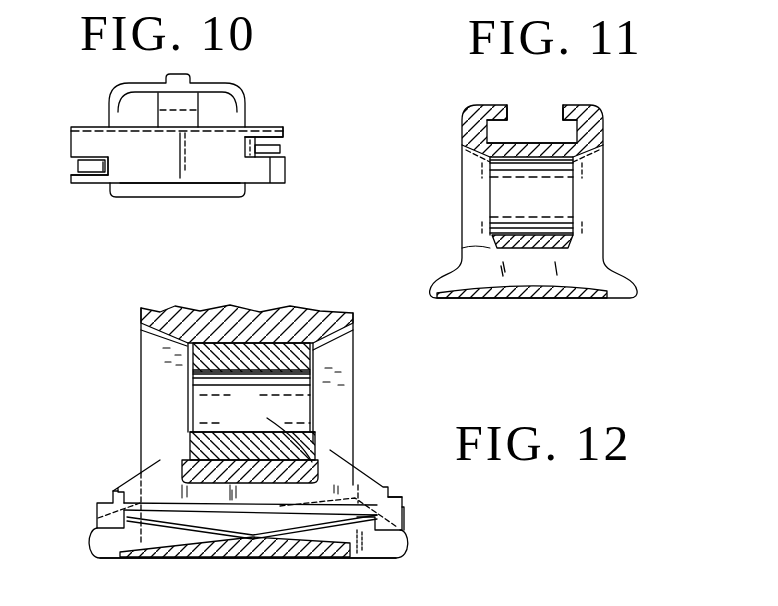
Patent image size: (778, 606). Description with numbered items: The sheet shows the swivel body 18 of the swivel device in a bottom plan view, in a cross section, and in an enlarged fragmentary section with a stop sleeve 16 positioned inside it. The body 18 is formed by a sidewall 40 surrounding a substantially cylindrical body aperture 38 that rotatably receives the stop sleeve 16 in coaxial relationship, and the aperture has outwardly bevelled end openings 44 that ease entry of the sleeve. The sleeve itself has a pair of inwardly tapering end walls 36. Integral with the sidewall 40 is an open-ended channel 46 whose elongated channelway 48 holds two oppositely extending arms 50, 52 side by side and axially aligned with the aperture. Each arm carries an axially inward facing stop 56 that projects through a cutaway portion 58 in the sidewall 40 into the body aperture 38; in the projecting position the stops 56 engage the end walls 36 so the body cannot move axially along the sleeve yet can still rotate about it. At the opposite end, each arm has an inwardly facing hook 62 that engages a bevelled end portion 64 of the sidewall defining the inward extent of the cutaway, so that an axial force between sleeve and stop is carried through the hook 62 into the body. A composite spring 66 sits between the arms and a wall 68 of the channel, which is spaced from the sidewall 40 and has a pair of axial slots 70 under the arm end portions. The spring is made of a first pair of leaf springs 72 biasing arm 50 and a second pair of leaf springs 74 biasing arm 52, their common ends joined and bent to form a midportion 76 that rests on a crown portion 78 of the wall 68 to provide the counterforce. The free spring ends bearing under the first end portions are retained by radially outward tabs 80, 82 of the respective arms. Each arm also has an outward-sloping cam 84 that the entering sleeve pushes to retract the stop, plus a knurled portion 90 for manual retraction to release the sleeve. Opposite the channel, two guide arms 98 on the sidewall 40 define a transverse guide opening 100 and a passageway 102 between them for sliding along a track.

In FIG. 12, the stop sleeve 16 is at (236, 352).
In FIG. 10, the swivel body 18 is at (109, 113).
In FIG. 11, the swivel body 18 is at (465, 130).
In FIG. 12, the swivel body 18 is at (355, 347).
In FIG. 12, the end walls 36 is at (190, 433).
In FIG. 11, the body aperture 38 is at (543, 197).
In FIG. 12, the body aperture 38 is at (313, 400).
In FIG. 10, the sidewall 40 is at (172, 183).
In FIG. 11, the sidewall 40 is at (604, 200).
In FIG. 12, the sidewall 40 is at (287, 321).
In FIG. 11, the end openings 44 is at (478, 178).
In FIG. 12, the end openings 44 is at (157, 374).
In FIG. 10, the channel 46 is at (210, 197).
In FIG. 11, the channel 46 is at (442, 268).
In FIG. 11, the channelway 48 is at (544, 274).
In FIG. 12, the channelway 48 is at (163, 533).
In FIG. 10, the arm 50 is at (280, 152).
In FIG. 12, the arm 50 is at (153, 500).
In FIG. 10, the arm 52 is at (80, 164).
In FIG. 12, the arm 52 is at (353, 523).
In FIG. 12, the stops 56 is at (178, 449).
In FIG. 11, the cutaway portions 58 is at (478, 245).
In FIG. 12, the hook 62 is at (223, 430).
In FIG. 11, the bevelled end portion 64 is at (490, 237).
In FIG. 12, the bevelled end portion 64 is at (337, 473).
In FIG. 12, the spring 66 is at (317, 525).
In FIG. 10, the wall 68 is at (162, 180).
In FIG. 11, the wall 68 is at (527, 297).
In FIG. 12, the wall 68 is at (277, 548).
In FIG. 10, the slots 70 is at (85, 183).
In FIG. 11, the slots 70 is at (615, 295).
In FIG. 12, the slots 70 is at (373, 543).
In FIG. 10, the first pair of leaf springs 72 is at (252, 145).
In FIG. 10, the second pair of leaf springs 74 is at (104, 178).
In FIG. 12, the midportion 76 is at (253, 540).
In FIG. 12, the crown portion 78 is at (253, 532).
In FIG. 10, the tab 80 is at (284, 150).
In FIG. 12, the tab 80 is at (110, 518).
In FIG. 10, the tab 82 is at (84, 168).
In FIG. 12, the tab 82 is at (404, 527).
In FIG. 12, the cam 84 is at (140, 477).
In FIG. 12, the knurled portion 90 is at (113, 497).
In FIG. 11, the guide arms 98 is at (497, 108).
In FIG. 11, the guide opening 100 is at (550, 132).
In FIG. 11, the passageway 102 is at (532, 113).